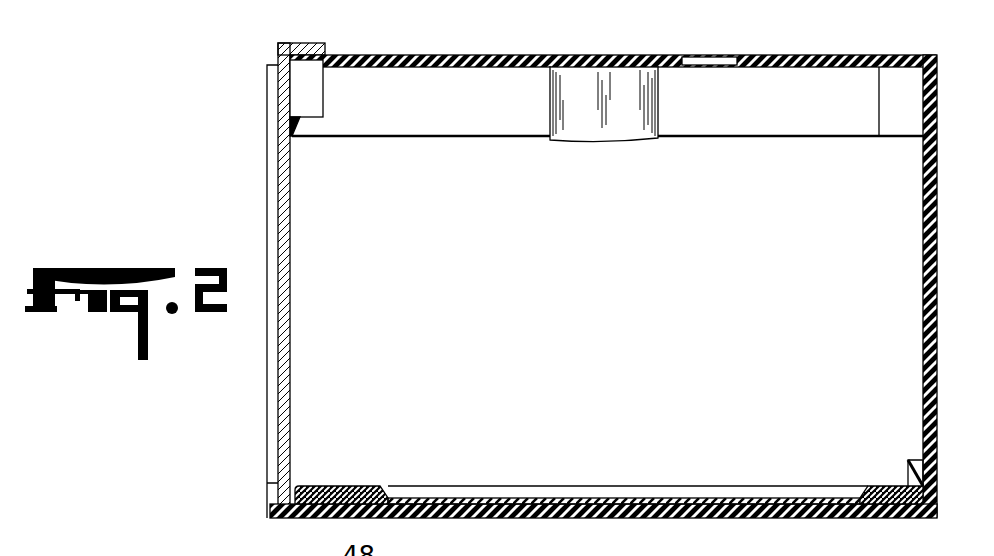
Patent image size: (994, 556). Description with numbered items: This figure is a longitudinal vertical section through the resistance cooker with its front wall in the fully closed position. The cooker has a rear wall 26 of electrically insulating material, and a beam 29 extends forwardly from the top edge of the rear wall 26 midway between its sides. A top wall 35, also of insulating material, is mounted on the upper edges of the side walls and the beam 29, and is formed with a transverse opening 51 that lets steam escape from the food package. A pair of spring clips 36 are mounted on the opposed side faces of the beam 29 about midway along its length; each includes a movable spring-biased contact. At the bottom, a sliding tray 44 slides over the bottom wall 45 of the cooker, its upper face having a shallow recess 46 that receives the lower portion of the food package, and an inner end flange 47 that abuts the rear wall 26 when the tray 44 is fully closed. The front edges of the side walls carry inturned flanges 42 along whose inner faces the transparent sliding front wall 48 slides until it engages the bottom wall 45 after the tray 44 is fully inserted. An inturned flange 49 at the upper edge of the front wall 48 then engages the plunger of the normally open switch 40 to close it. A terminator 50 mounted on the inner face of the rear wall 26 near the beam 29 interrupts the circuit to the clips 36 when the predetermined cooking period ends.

The rear wall 26 is at (923, 313).
The beam 29 is at (687, 111).
The top wall 35 is at (440, 55).
The spring clips 36 is at (573, 118).
The switch 40 is at (305, 98).
The inturned flanges 42 is at (267, 432).
The sliding tray 44 is at (372, 485).
The bottom wall 45 is at (674, 520).
The shallow recess 46 is at (620, 487).
The inner end flange 47 is at (918, 460).
The sliding front wall 48 is at (291, 196).
The inturned flange 49 is at (297, 43).
The terminator 50 is at (900, 126).
The transverse opening 51 is at (710, 56).